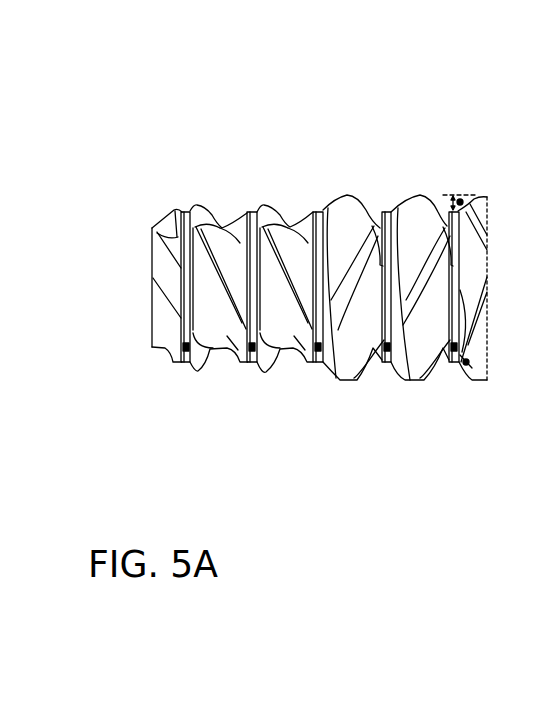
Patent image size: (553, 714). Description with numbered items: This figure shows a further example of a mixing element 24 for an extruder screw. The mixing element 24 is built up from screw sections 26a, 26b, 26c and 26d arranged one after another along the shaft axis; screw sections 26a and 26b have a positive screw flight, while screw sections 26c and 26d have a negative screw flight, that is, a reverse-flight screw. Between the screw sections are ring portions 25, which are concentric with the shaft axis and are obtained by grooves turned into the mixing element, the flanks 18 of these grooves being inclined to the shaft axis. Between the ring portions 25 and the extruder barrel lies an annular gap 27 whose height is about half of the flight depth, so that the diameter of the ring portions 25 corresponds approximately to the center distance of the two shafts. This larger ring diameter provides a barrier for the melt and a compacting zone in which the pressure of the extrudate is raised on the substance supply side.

The mixing element 24 is at (316, 240).
The screw section 26a is at (213, 196).
The screw section 26b is at (281, 194).
The screw section 26c is at (363, 182).
The screw section 26d is at (427, 182).
The ring portions 25 is at (184, 363).
The annular gap 27 is at (462, 200).
The flanks 18 is at (466, 362).